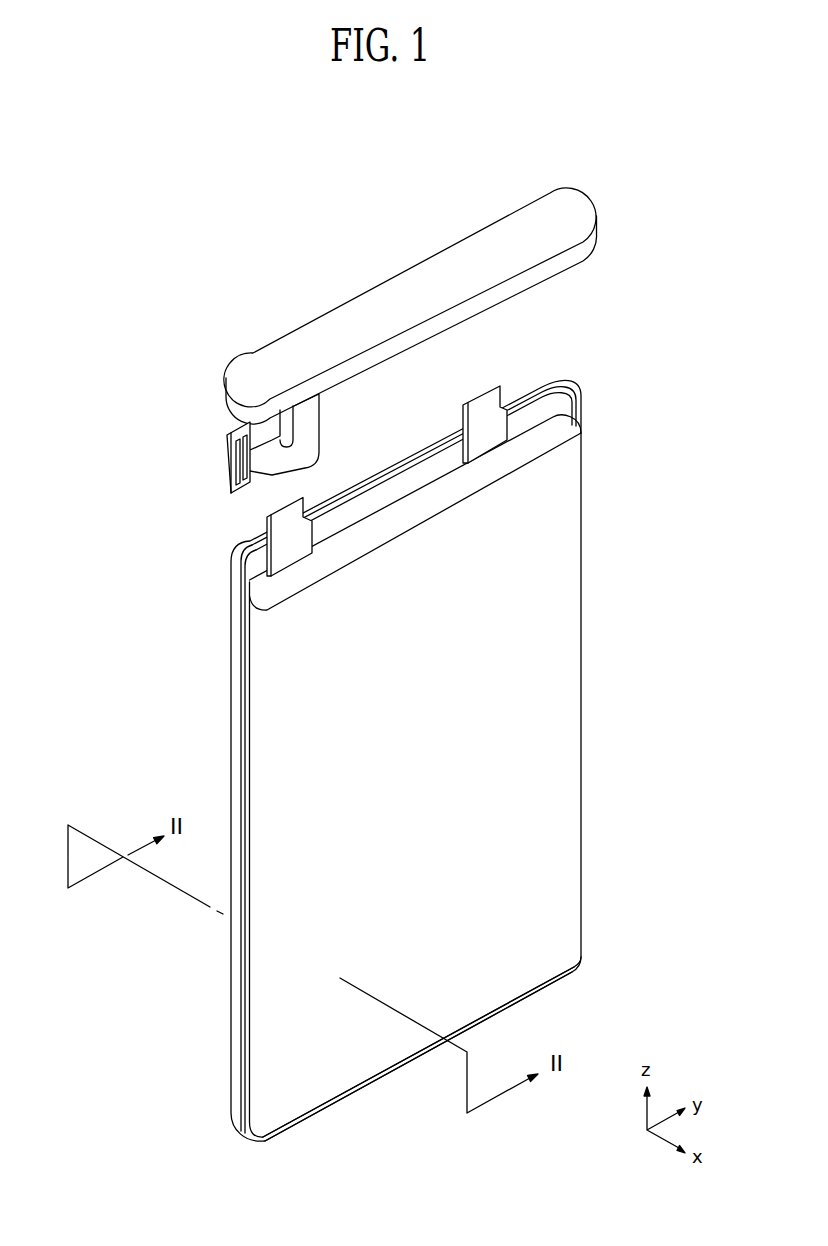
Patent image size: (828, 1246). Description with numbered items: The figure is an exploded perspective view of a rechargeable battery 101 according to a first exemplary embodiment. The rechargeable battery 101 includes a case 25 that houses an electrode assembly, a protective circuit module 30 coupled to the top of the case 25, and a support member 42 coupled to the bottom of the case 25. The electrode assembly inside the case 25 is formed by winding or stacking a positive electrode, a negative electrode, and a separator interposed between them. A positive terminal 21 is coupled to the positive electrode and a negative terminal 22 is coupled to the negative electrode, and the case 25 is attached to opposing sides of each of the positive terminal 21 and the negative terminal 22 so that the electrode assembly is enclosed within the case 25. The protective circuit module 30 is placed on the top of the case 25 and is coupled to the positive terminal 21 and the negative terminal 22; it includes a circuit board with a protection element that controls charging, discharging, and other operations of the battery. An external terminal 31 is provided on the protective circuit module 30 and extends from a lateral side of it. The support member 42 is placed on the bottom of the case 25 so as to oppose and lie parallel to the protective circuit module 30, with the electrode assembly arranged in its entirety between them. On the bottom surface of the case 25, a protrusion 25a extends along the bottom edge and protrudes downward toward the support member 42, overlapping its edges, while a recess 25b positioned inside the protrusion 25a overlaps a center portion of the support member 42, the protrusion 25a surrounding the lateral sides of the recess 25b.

The rechargeable battery 101 is at (402, 218).
The protective circuit module 30 is at (333, 313).
The external terminal 31 is at (227, 467).
The positive terminal 21 is at (266, 516).
The negative terminal 22 is at (477, 397).
The case 25 is at (584, 399).
The protrusion 25a is at (240, 1130).
The recess 25b is at (258, 1136).
The support member 42 is at (312, 1128).